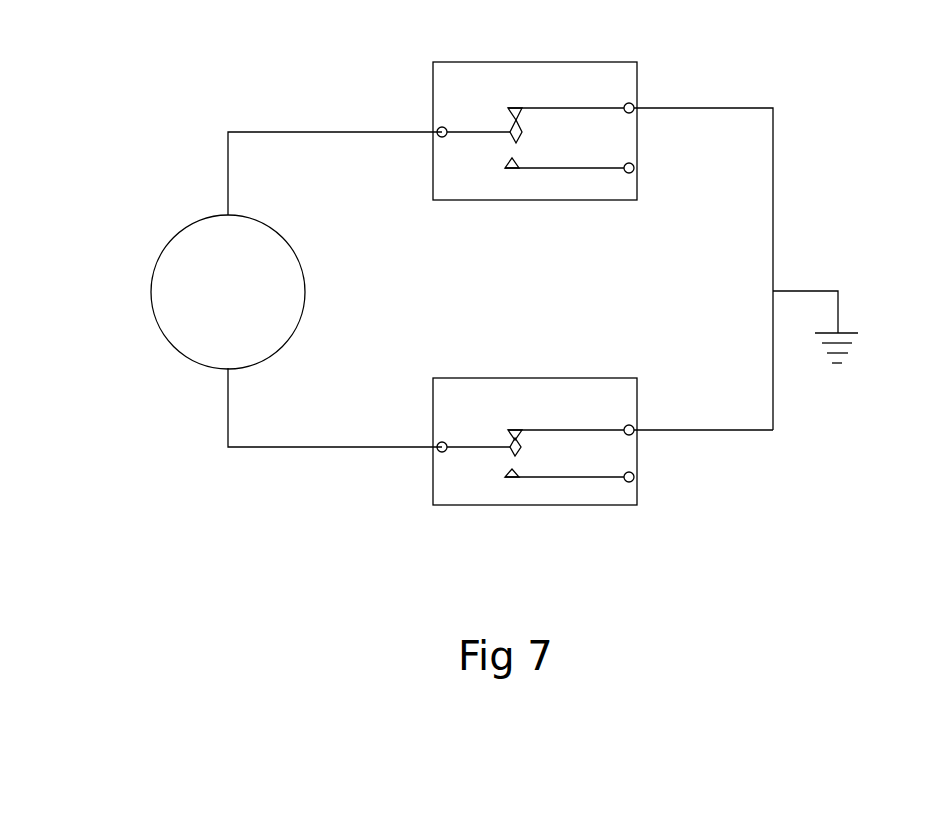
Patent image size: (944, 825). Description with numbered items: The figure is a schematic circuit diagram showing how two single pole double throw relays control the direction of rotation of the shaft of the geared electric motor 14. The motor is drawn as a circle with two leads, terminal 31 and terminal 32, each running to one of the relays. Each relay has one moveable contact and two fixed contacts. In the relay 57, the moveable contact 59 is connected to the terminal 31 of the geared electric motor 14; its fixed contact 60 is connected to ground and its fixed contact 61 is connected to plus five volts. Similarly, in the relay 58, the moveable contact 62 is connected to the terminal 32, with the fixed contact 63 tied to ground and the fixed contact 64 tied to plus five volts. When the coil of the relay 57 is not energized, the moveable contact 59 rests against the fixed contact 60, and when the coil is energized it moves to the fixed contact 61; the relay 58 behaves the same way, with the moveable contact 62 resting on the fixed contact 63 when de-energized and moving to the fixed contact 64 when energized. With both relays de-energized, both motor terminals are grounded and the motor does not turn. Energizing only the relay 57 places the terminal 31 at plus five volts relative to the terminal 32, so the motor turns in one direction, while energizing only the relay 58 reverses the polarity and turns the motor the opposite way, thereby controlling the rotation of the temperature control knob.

The geared electric motor 14 is at (167, 292).
The terminal 31 is at (265, 172).
The terminal 32 is at (261, 414).
The relay 57 is at (582, 108).
The relay 58 is at (470, 467).
The moveable contact 59 is at (411, 100).
The fixed contact 60 is at (683, 244).
The fixed contact 61 is at (626, 189).
The moveable contact 62 is at (412, 465).
The fixed contact 63 is at (640, 388).
The fixed contact 64 is at (640, 500).